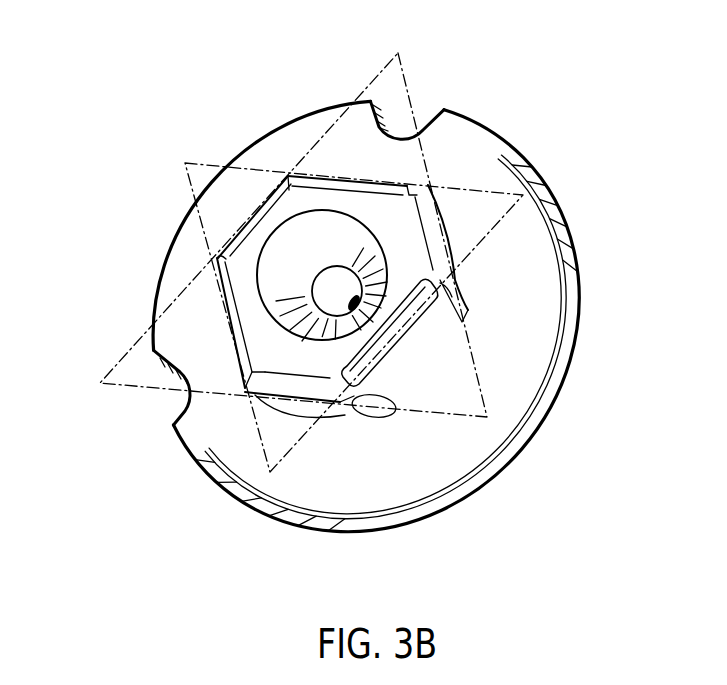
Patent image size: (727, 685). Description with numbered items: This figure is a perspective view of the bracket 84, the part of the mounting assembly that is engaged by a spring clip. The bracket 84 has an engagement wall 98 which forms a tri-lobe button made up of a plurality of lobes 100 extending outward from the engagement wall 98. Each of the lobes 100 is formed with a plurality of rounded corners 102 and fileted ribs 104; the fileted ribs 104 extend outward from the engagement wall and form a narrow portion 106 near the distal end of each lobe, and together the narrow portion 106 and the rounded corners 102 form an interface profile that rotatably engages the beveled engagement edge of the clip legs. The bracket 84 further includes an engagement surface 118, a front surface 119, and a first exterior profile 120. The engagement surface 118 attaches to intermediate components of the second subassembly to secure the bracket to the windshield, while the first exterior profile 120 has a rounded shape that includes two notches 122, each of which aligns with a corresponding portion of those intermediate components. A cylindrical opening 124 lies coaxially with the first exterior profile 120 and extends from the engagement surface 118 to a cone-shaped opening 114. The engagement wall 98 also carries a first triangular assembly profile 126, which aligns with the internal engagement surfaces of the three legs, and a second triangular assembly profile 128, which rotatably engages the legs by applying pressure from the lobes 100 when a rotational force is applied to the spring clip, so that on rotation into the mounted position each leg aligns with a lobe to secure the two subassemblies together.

The bracket 84 is at (596, 89).
The engagement wall 98 is at (413, 346).
The lobes 100 is at (460, 196).
The rounded corners 102 is at (428, 215).
The fileted ribs 104 is at (472, 318).
The narrow portion 106 is at (440, 243).
The cone-shaped opening 114 is at (312, 237).
The engagement surface 118 is at (513, 450).
The front surface 119 is at (508, 380).
The first exterior profile 120 is at (527, 417).
The notches 122 is at (428, 123).
The cylindrical opening 124 is at (342, 280).
The first triangular assembly profile 126 is at (205, 165).
The second triangular assembly profile 128 is at (118, 358).